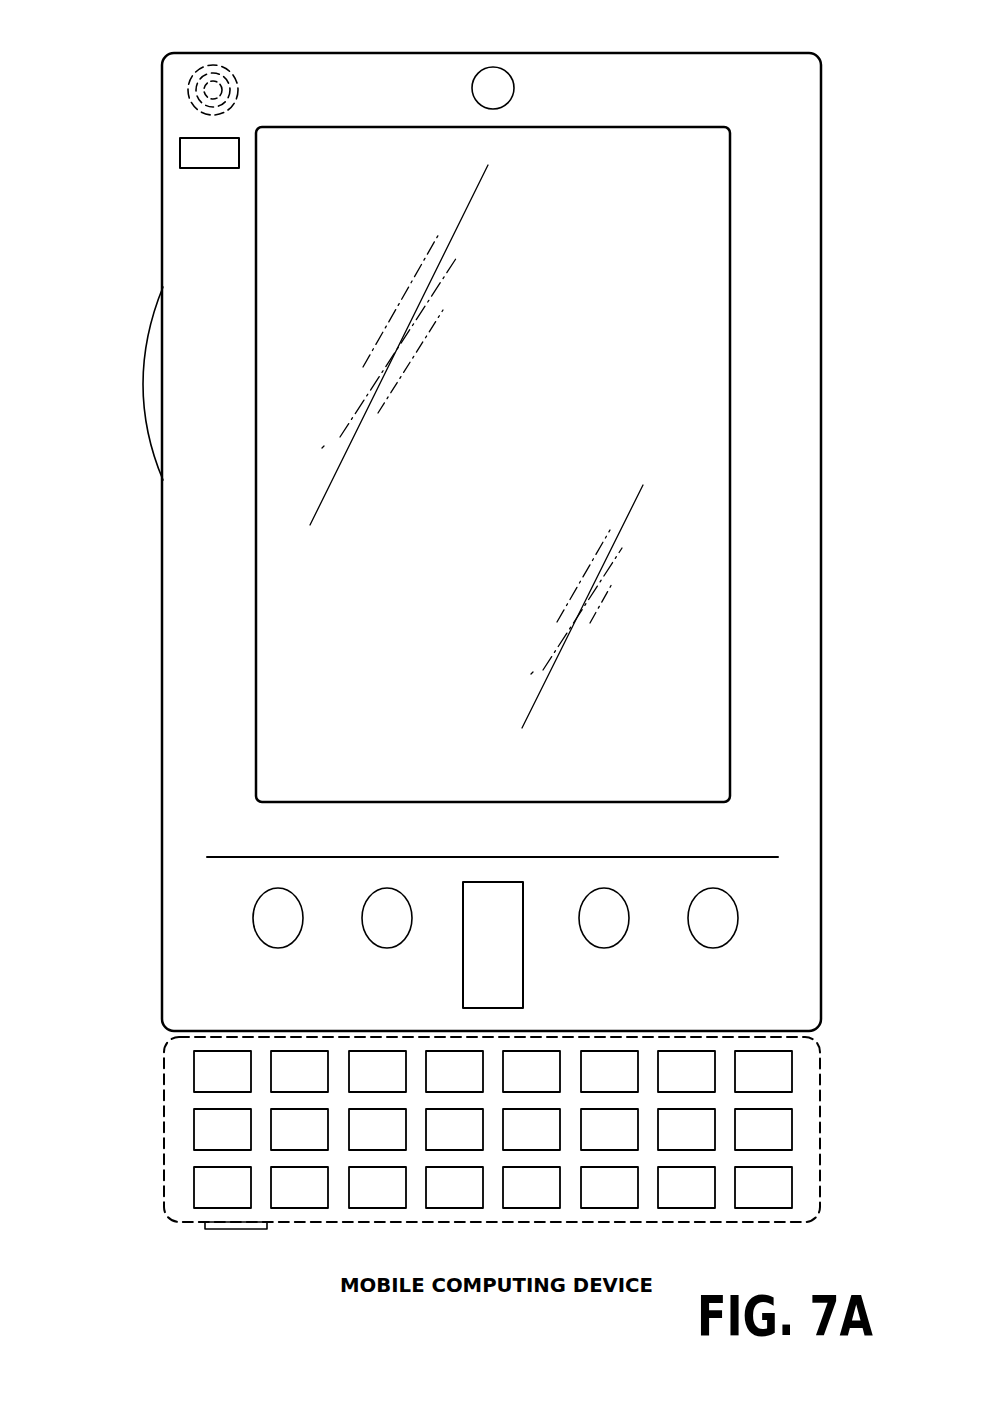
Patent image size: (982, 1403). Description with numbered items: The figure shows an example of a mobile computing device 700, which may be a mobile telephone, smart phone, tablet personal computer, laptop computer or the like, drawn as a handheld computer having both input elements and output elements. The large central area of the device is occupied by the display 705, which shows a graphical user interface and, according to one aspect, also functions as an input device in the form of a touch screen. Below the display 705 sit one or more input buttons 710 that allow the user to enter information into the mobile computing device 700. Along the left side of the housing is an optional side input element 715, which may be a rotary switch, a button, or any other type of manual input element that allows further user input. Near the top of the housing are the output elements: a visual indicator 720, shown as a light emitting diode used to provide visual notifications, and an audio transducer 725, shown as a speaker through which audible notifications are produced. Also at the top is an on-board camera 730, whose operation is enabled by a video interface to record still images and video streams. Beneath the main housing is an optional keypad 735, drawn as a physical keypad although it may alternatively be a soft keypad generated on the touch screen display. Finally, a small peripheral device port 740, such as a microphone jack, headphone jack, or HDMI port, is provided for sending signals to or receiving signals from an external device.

The mobile computing device 700 is at (785, 52).
The display 705 is at (280, 638).
The input buttons 710 is at (278, 948).
The side input element 715 is at (143, 383).
The visual indicator 720 is at (180, 153).
The audio transducer 725 is at (180, 92).
The on-board camera 730 is at (491, 67).
The keypad 735 is at (173, 1128).
The peripheral device port 740 is at (215, 1227).